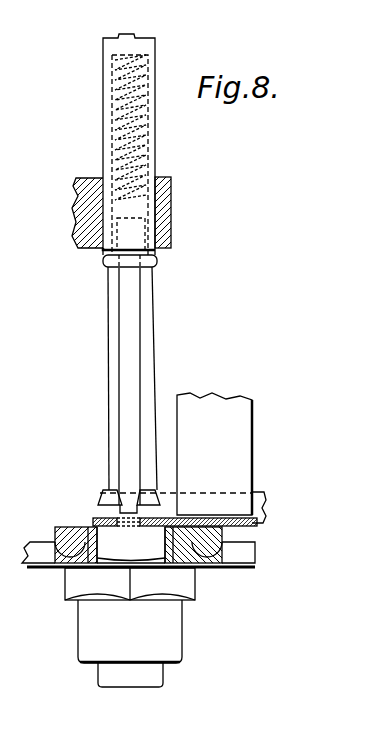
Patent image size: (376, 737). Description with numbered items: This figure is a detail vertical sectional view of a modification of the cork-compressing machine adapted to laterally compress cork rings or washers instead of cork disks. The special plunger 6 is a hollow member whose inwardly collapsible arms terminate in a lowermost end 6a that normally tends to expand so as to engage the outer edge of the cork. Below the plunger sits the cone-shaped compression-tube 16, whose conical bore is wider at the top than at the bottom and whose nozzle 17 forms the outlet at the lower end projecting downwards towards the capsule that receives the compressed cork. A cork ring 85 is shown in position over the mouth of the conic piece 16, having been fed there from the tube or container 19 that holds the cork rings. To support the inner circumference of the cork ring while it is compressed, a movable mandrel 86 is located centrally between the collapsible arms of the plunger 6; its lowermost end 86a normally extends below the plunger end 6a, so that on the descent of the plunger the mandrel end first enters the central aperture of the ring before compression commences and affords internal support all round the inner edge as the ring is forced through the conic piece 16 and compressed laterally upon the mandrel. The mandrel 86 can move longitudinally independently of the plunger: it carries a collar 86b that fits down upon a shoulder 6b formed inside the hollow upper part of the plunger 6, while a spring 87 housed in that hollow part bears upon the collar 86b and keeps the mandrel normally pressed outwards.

The special plunger 6 is at (140, 346).
The lower end of the plunger 6a is at (125, 490).
The shoulder 6b is at (75, 240).
The compression-tube 16 is at (64, 567).
The nozzle 17 is at (137, 688).
The tube or container 19 is at (243, 432).
The cork ring 85 is at (93, 520).
The movable mandrel 86 is at (112, 38).
The lowermost end of the mandrel 86a is at (130, 513).
The collar 86b is at (142, 211).
The spring 87 is at (115, 157).